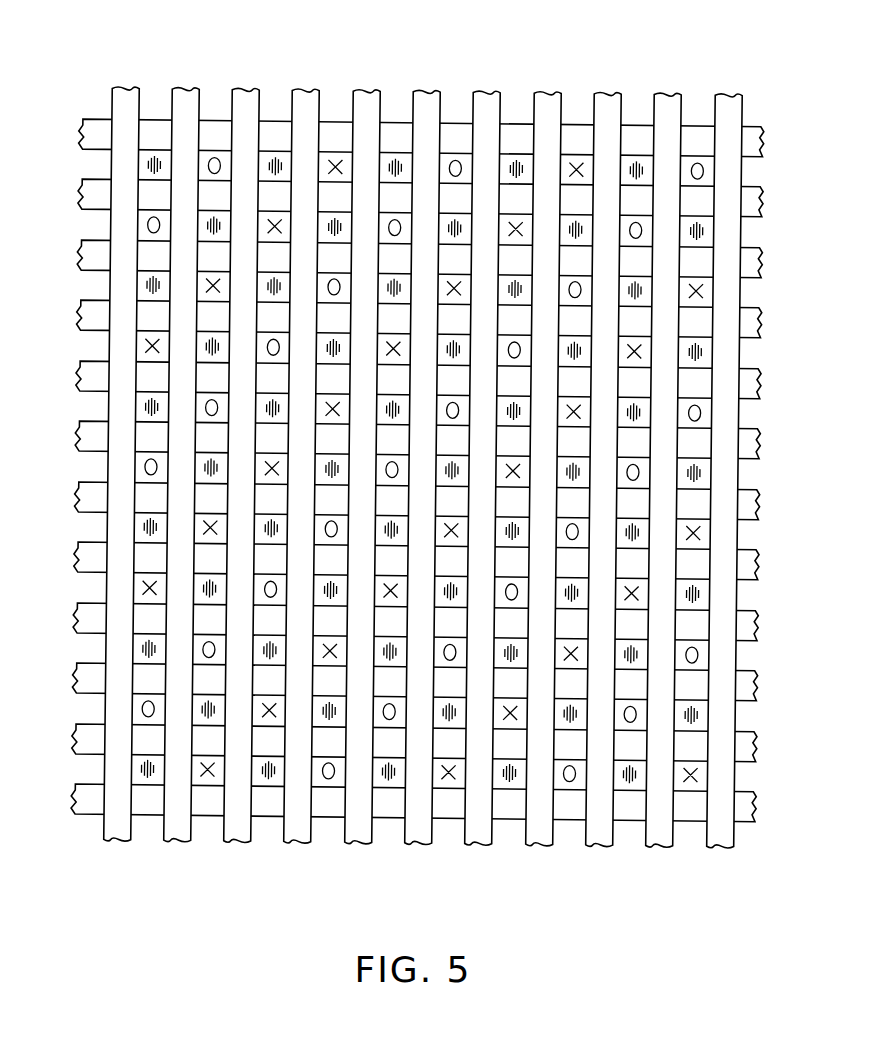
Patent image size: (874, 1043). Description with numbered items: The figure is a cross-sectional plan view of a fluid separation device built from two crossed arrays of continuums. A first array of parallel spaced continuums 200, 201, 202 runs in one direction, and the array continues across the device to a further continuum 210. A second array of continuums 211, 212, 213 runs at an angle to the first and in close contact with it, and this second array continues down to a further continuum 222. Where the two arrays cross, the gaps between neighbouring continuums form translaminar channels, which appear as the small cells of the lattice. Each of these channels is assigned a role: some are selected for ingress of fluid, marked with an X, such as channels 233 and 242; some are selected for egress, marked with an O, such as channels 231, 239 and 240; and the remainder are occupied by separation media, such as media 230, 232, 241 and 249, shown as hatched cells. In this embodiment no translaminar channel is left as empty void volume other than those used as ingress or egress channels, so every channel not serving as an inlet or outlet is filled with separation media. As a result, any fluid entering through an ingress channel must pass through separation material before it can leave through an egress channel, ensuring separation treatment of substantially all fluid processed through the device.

The continuum 200 is at (128, 93).
The continuum 201 is at (197, 92).
The continuum 202 is at (253, 97).
The last vertical bar 210 is at (737, 100).
The continuum 211 is at (762, 147).
The continuum 212 is at (762, 205).
The continuum 213 is at (762, 263).
The last horizontal bar 222 is at (747, 817).
The separation media 230 is at (152, 155).
The O cell element 231 is at (209, 153).
The separation media 232 is at (273, 157).
The X cell element 233 is at (325, 157).
The O cell element 239 is at (692, 158).
The O cell element 240 is at (145, 221).
The separation media 241 is at (205, 233).
The X cell element 242 is at (262, 235).
The hatched cell element 249 is at (693, 237).